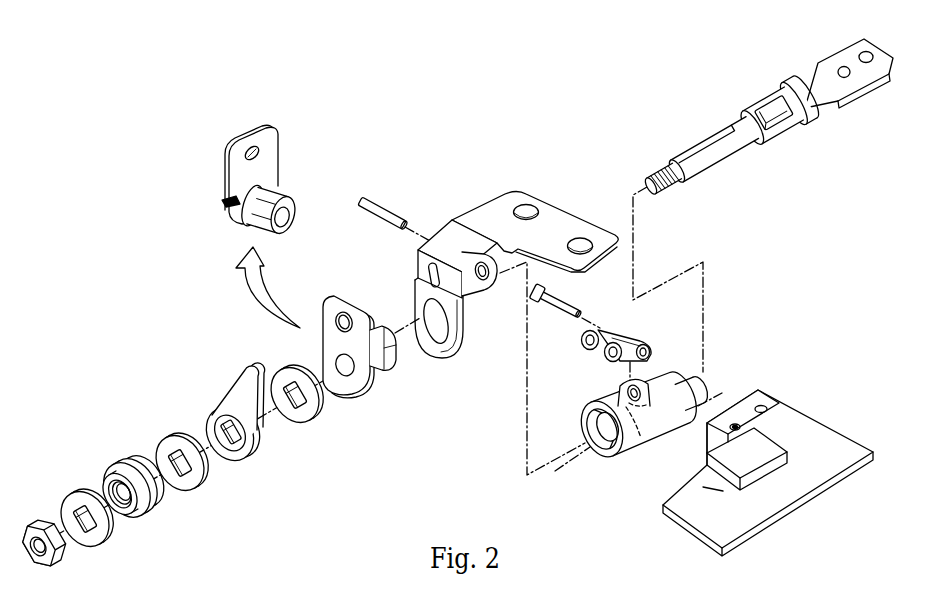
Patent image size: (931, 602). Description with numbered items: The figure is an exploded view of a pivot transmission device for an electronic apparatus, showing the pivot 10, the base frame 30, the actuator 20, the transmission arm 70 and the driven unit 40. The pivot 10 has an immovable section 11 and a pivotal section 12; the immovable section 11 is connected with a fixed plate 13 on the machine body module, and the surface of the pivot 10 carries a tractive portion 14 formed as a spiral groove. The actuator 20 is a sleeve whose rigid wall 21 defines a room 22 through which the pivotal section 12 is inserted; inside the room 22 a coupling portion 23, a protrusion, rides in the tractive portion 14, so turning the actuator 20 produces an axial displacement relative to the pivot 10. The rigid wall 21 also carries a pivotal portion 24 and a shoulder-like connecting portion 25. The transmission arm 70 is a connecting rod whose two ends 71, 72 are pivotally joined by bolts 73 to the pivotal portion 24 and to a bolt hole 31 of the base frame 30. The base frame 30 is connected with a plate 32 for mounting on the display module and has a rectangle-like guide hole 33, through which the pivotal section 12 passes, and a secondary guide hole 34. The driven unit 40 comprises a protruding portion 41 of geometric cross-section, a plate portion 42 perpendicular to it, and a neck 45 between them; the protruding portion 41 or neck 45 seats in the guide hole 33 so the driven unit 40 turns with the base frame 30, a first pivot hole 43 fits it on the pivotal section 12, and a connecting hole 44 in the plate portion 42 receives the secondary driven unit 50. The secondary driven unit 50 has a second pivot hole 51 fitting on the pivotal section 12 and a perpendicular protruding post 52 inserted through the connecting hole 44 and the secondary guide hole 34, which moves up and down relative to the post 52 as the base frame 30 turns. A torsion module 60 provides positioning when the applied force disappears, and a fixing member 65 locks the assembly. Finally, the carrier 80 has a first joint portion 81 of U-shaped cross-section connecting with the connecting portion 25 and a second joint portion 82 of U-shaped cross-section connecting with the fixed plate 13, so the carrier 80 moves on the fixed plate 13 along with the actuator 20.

The pivot 10 is at (764, 132).
The immovable section 11 is at (846, 56).
The pivotal section 12 is at (718, 166).
The fixed plate 13 is at (764, 464).
The tractive portion 14 is at (752, 153).
The actuator 20 is at (638, 417).
The rigid wall 21 is at (669, 367).
The room 22 is at (598, 445).
The coupling portion 23 is at (634, 432).
The pivotal portion 24 is at (619, 387).
The connecting portion 25 is at (701, 395).
The base frame 30 is at (495, 258).
The bolt hole 31 is at (489, 284).
The plate 32 is at (556, 213).
The guide hole 33 is at (451, 341).
The secondary guide hole 34 is at (403, 274).
The driven unit 40 is at (304, 274).
The protruding portion 41 is at (283, 193).
The plate portion 42 is at (224, 181).
The first pivot hole 43 is at (288, 214).
The connecting hole 44 is at (260, 153).
The neck 45 is at (222, 204).
The secondary driven unit 50 is at (211, 415).
The second pivot hole 51 is at (236, 442).
The protruding post 52 is at (243, 373).
The torsion module 60 is at (102, 454).
The fixing member 65 is at (63, 554).
The transmission arm 70 is at (610, 326).
The end 71 is at (648, 338).
The end 72 is at (575, 341).
The bolts 73 is at (383, 212).
The carrier 80 is at (759, 431).
The first joint portion 81 is at (731, 418).
The second joint portion 82 is at (711, 488).